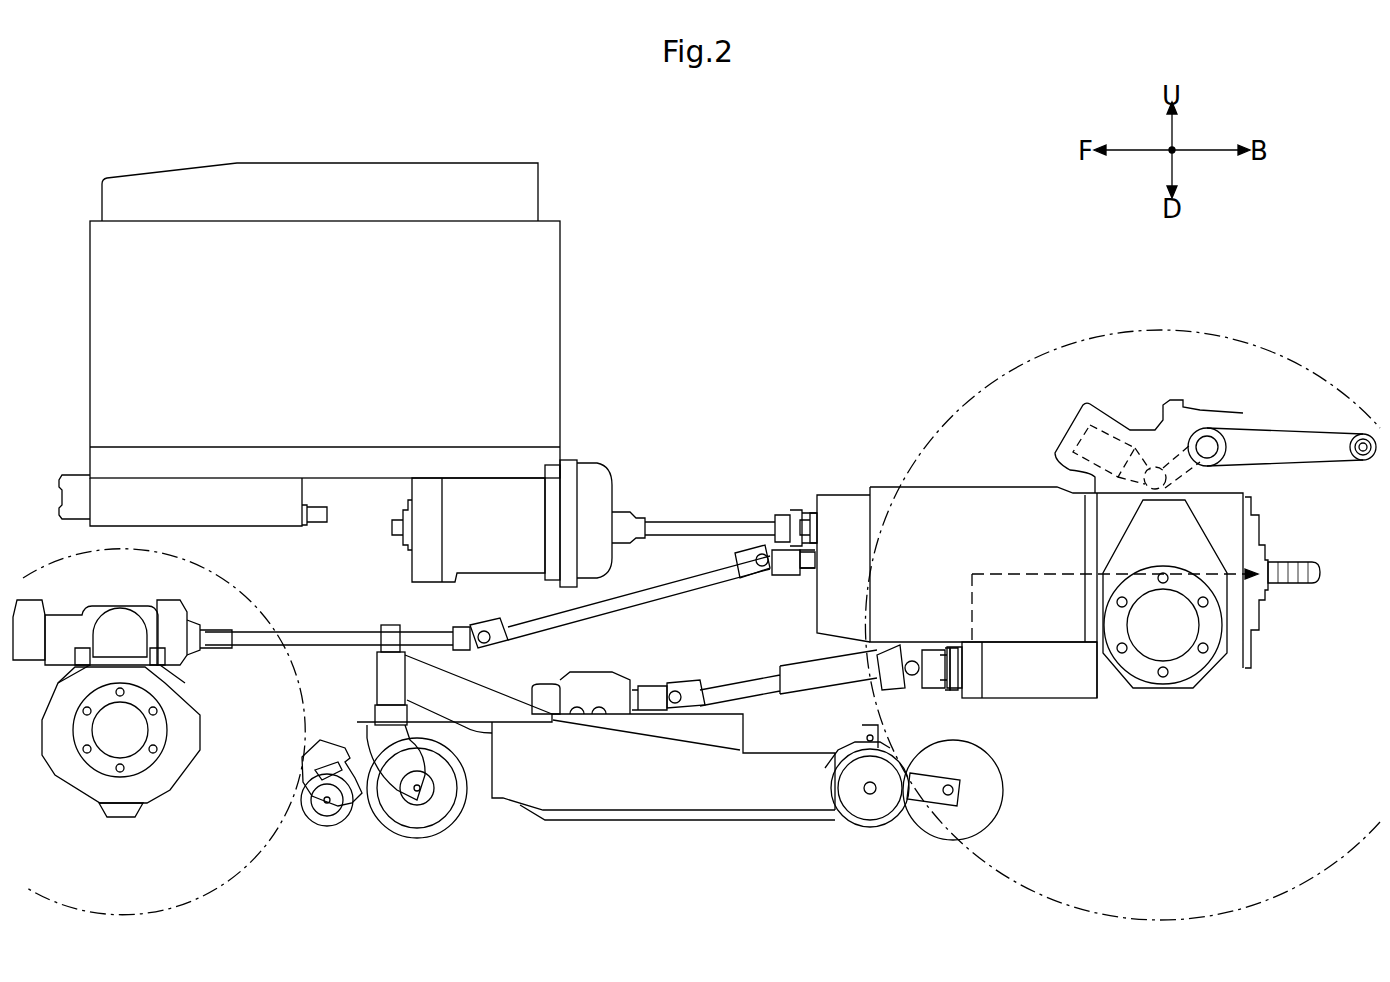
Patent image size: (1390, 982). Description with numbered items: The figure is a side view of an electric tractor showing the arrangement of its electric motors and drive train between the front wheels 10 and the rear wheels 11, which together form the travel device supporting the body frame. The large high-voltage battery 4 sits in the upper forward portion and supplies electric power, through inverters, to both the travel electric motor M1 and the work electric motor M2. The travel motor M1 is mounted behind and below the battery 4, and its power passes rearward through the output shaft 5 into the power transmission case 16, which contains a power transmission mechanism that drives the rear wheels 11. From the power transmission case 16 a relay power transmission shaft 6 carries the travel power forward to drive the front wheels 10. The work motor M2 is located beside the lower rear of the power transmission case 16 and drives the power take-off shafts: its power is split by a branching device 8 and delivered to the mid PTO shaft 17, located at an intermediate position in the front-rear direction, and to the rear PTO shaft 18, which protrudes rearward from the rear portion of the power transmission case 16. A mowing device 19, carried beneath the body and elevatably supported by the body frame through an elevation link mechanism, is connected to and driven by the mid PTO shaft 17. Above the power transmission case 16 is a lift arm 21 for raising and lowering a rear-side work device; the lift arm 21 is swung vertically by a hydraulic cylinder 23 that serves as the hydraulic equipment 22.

The battery 4 is at (307, 172).
The travel electric motor M1 is at (505, 498).
The output shaft 5 is at (707, 527).
The relay power transmission shaft 6 is at (645, 597).
The power transmission case 16 is at (1010, 495).
The mid PTO shaft 17 is at (948, 690).
The branching device 8 is at (972, 700).
The work electric motor M2 is at (1072, 690).
The rear PTO shaft 18 is at (1318, 590).
The lift arm 21 is at (1317, 452).
The hydraulic equipment 22 is at (1105, 408).
The hydraulic cylinder 23 is at (1149, 426).
The mowing device 19 is at (615, 795).
The front wheels 10 is at (213, 888).
The rear wheels 11 is at (1010, 885).